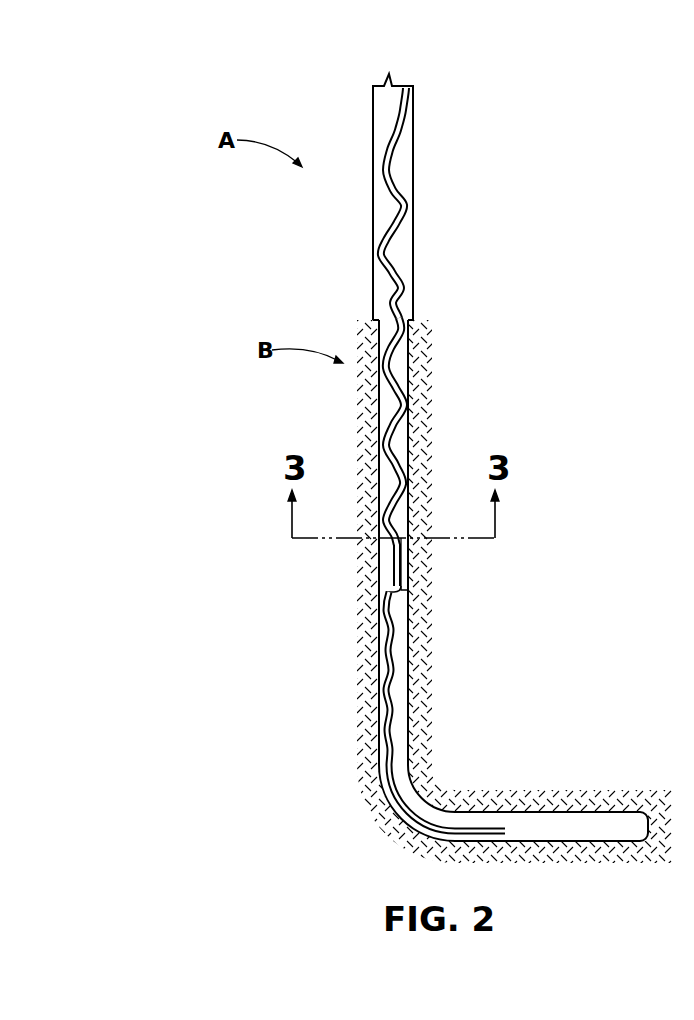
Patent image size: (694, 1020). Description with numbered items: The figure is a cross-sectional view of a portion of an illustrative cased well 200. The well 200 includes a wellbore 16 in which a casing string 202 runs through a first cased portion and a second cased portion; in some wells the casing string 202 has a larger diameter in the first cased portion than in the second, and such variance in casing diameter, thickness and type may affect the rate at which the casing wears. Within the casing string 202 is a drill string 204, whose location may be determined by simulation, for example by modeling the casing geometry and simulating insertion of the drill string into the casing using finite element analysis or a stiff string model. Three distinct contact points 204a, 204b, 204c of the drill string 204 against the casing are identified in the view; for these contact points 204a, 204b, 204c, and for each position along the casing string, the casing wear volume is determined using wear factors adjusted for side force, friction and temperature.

The cased well 200 is at (244, 99).
The wellbore 16 is at (373, 152).
The casing string 202 is at (373, 228).
The drill string 204 is at (400, 428).
The contact point 204a is at (407, 543).
The contact point 204b is at (397, 585).
The contact point 204c is at (387, 602).